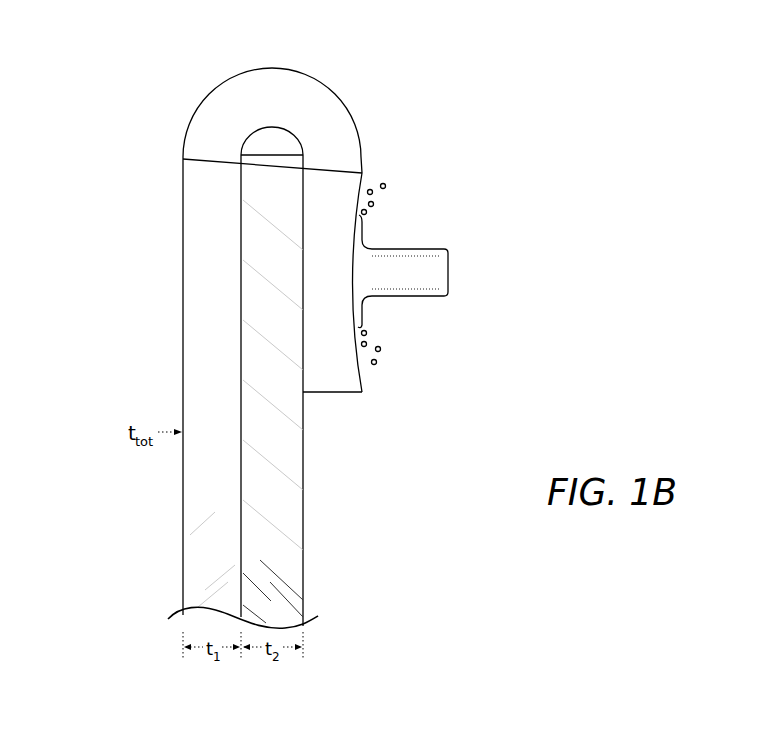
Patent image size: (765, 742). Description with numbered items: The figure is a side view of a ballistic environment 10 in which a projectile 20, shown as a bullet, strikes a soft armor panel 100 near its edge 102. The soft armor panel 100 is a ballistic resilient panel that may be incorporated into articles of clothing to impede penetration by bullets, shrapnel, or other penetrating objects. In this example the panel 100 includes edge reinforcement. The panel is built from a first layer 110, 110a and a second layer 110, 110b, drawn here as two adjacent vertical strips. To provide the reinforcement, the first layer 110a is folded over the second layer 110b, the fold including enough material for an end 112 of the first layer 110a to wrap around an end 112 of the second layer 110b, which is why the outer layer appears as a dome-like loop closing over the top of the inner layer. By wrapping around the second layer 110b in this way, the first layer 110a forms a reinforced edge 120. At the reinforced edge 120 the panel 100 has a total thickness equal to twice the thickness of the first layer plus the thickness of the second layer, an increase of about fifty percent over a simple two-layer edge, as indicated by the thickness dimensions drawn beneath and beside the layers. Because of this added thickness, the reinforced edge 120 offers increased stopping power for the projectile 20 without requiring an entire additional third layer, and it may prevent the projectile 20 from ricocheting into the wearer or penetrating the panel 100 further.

The ballistic environment 10 is at (553, 57).
The projectile 20 is at (422, 249).
The soft armor panel 100 is at (442, 480).
The edge 102 is at (233, 50).
The layer 110 is at (354, 118).
The first layer 110a is at (365, 460).
The second layer 110b is at (262, 148).
The end 112 is at (292, 289).
The reinforced edge 120 is at (400, 372).